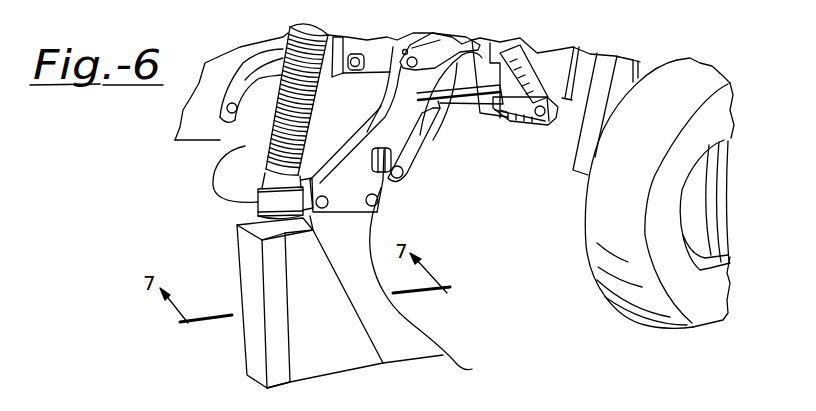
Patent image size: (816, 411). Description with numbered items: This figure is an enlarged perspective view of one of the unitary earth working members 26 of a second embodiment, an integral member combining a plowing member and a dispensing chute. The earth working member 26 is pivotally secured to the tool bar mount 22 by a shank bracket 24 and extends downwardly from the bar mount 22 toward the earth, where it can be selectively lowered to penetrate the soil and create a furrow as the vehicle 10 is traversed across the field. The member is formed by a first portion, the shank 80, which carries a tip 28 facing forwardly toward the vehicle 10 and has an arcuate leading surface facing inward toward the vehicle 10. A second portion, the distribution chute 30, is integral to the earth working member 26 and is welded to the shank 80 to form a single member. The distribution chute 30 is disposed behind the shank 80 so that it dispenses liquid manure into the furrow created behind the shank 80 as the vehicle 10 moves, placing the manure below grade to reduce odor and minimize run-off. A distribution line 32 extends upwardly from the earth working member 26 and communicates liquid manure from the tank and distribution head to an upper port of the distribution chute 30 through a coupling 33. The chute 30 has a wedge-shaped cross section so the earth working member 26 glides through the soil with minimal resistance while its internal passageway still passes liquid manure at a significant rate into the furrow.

The vehicle 10 is at (523, 152).
The tool bar mount 22 is at (445, 88).
The shank bracket 24 is at (385, 192).
The unitary earth working member 26 is at (210, 271).
The tip 28 is at (472, 369).
The distribution chute 30 is at (320, 373).
The distribution line 32 is at (265, 150).
The coupling 33 is at (256, 201).
The shank 80 is at (362, 264).